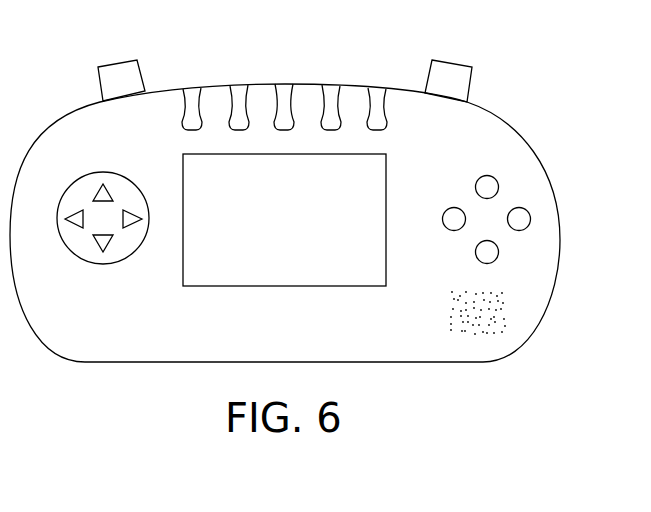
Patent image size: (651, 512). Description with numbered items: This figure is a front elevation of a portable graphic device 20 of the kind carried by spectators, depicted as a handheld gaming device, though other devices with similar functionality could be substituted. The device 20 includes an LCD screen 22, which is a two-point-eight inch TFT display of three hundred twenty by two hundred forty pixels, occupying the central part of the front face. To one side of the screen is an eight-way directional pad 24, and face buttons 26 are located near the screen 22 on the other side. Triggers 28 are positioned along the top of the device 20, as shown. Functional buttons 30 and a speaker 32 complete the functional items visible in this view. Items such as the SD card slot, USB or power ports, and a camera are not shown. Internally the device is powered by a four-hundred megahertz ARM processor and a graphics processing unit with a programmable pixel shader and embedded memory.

The graphic device 20 is at (443, 423).
The LCD screen 22 is at (298, 232).
The 8 way directional pad 24 is at (96, 263).
The face buttons 26 is at (531, 219).
The triggers 28 is at (117, 64).
The functional buttons 30 is at (287, 88).
The speaker 32 is at (503, 315).